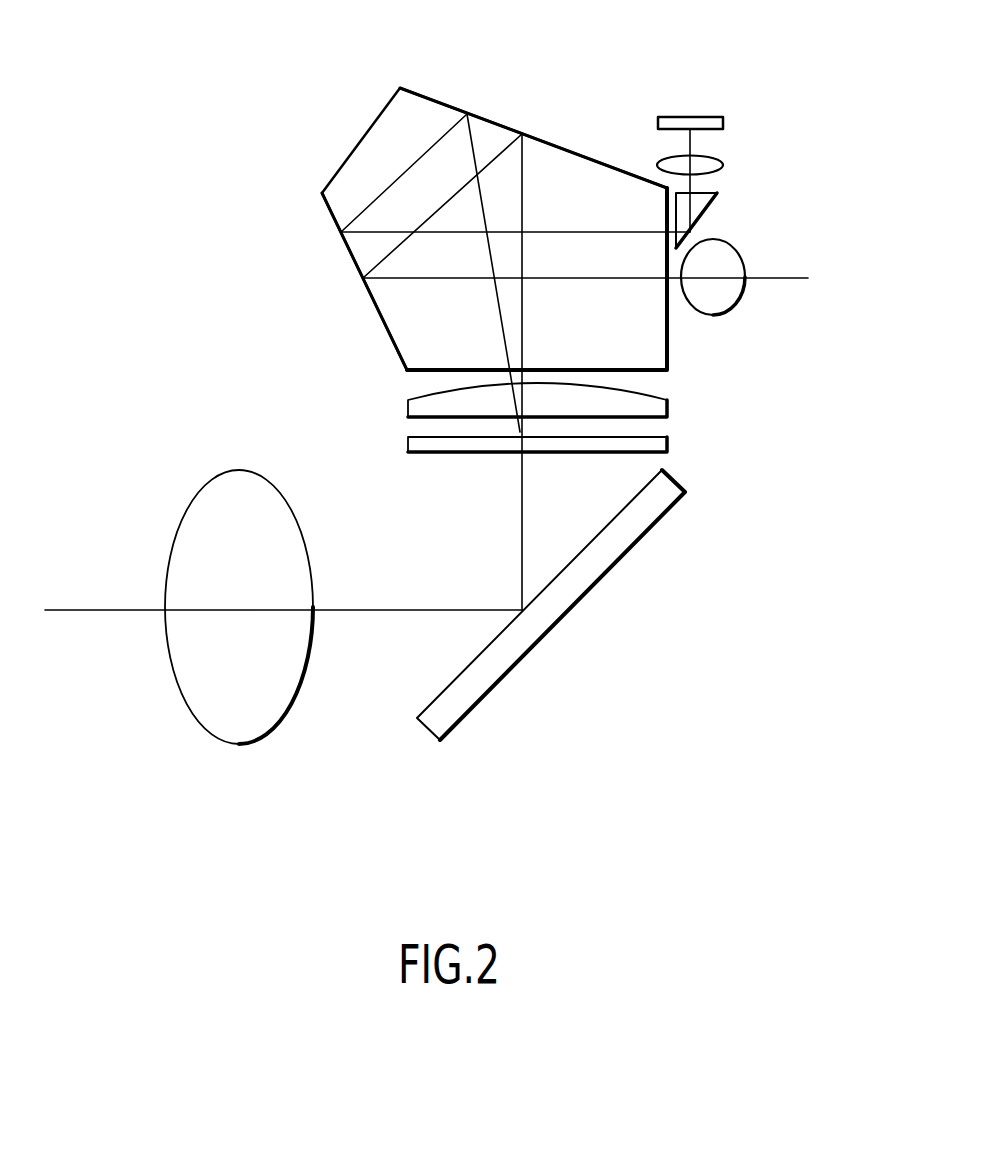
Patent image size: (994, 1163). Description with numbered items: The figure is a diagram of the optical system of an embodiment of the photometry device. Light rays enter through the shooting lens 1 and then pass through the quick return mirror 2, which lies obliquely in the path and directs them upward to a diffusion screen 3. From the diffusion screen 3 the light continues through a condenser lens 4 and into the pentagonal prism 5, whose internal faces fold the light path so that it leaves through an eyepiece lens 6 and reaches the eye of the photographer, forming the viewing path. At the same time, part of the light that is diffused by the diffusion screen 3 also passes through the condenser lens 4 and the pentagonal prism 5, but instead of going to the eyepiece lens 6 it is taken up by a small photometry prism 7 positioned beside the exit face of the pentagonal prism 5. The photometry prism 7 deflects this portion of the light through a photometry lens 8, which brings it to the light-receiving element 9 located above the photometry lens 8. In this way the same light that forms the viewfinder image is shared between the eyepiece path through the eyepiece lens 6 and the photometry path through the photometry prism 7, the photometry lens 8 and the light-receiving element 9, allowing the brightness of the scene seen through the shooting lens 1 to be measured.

The shooting lens 1 is at (235, 720).
The quick return mirror 2 is at (567, 594).
The diffusion screen 3 is at (668, 444).
The condenser lens 4 is at (668, 404).
The pentagonal prism 5 is at (430, 113).
The eyepiece lens 6 is at (737, 302).
The photometry prism 7 is at (703, 213).
The photometry lens 8 is at (722, 165).
The light-receiving element 9 is at (702, 117).